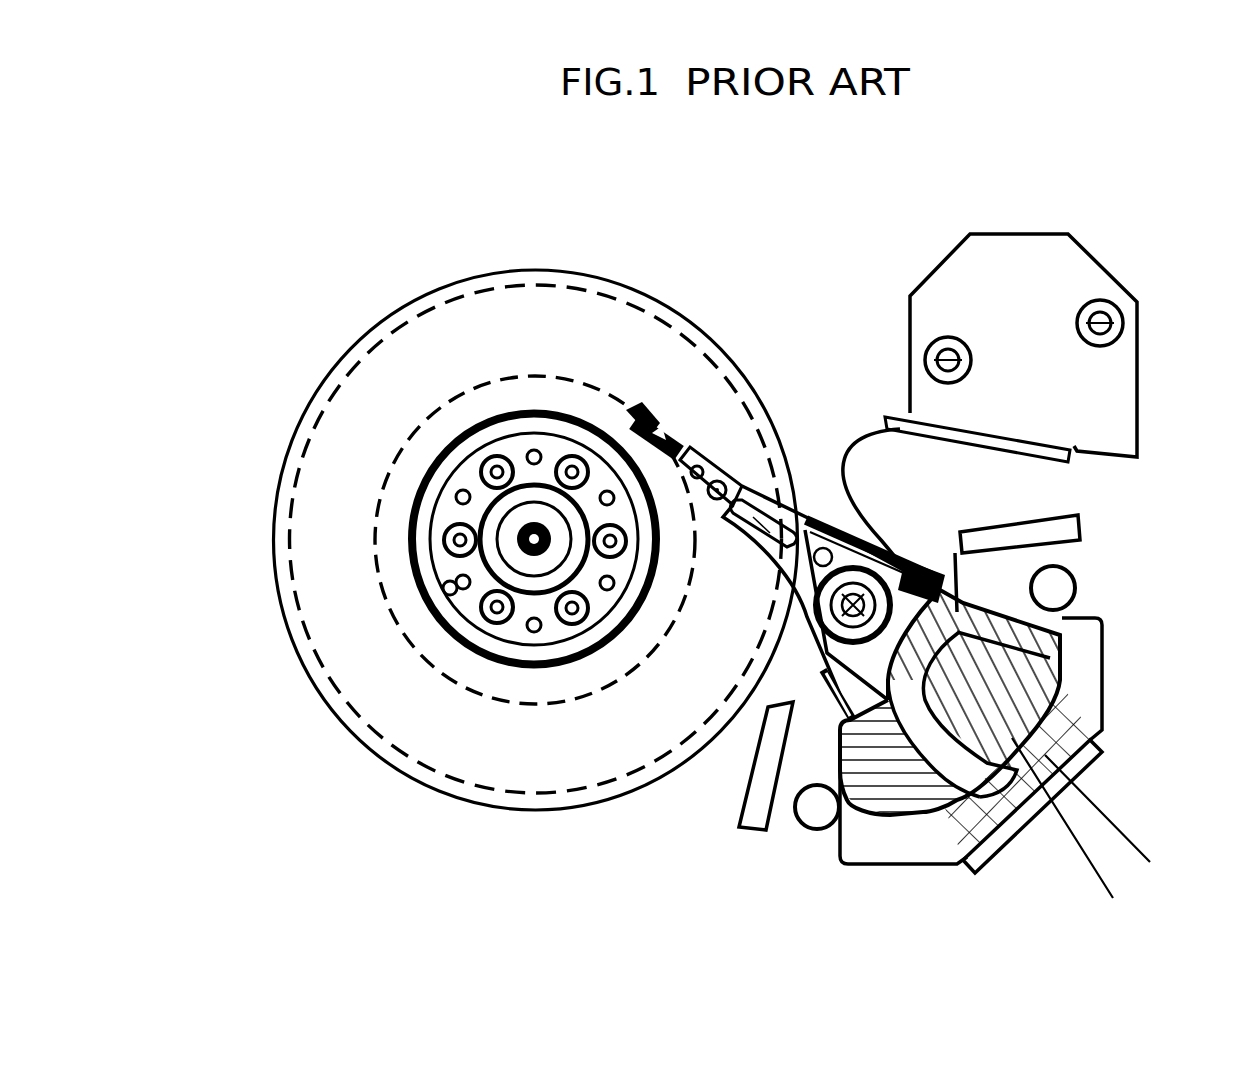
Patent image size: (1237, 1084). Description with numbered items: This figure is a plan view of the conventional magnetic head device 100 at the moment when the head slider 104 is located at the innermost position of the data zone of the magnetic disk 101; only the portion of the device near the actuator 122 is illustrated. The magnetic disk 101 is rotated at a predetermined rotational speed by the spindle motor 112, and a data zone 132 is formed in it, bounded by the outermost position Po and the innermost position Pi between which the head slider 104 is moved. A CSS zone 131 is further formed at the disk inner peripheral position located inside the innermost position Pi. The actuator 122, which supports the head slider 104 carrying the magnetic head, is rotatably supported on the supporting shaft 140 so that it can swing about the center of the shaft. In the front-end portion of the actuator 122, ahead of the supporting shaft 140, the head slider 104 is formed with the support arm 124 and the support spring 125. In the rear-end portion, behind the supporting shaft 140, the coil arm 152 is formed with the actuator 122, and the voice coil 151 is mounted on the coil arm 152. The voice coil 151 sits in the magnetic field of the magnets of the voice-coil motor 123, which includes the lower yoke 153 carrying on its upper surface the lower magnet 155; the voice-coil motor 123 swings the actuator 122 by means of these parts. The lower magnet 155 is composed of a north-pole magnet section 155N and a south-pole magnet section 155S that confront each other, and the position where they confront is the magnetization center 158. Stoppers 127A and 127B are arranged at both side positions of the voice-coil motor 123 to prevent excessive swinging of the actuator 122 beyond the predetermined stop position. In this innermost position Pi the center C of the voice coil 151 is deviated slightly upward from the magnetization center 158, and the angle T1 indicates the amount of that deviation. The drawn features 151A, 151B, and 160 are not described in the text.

The magnetic head device 100 is at (757, 184).
The magnetic disk 101 is at (600, 268).
The head slider 104 is at (655, 405).
The spindle motor 112 is at (534, 449).
The actuator 122 is at (816, 518).
The voice-coil motor 123 is at (929, 715).
The support arm 124 is at (760, 562).
The support spring 125 is at (672, 440).
The stopper 127A is at (1078, 590).
The stopper 127B is at (812, 822).
The CSS zone 131 is at (440, 455).
The data zone 132 is at (318, 518).
The supporting shaft 140 is at (905, 560).
The voice coil 151 is at (1050, 700).
The upper magnet portion 151A is at (1050, 565).
The lower magnet portion 151B is at (917, 745).
The coil arm 152 is at (795, 713).
The lower yoke 153 is at (1092, 652).
The lower magnet 155 is at (945, 815).
The north-pole magnet section 155N is at (1030, 632).
The south-pole magnet section 155S is at (867, 800).
The magnetization center 158 is at (970, 747).
The ramp 160 is at (866, 468).
The outermost position Po is at (394, 326).
The innermost position Pi is at (590, 378).
The center of the voice coil C is at (1110, 820).
The angle T1i T1 is at (1175, 825).